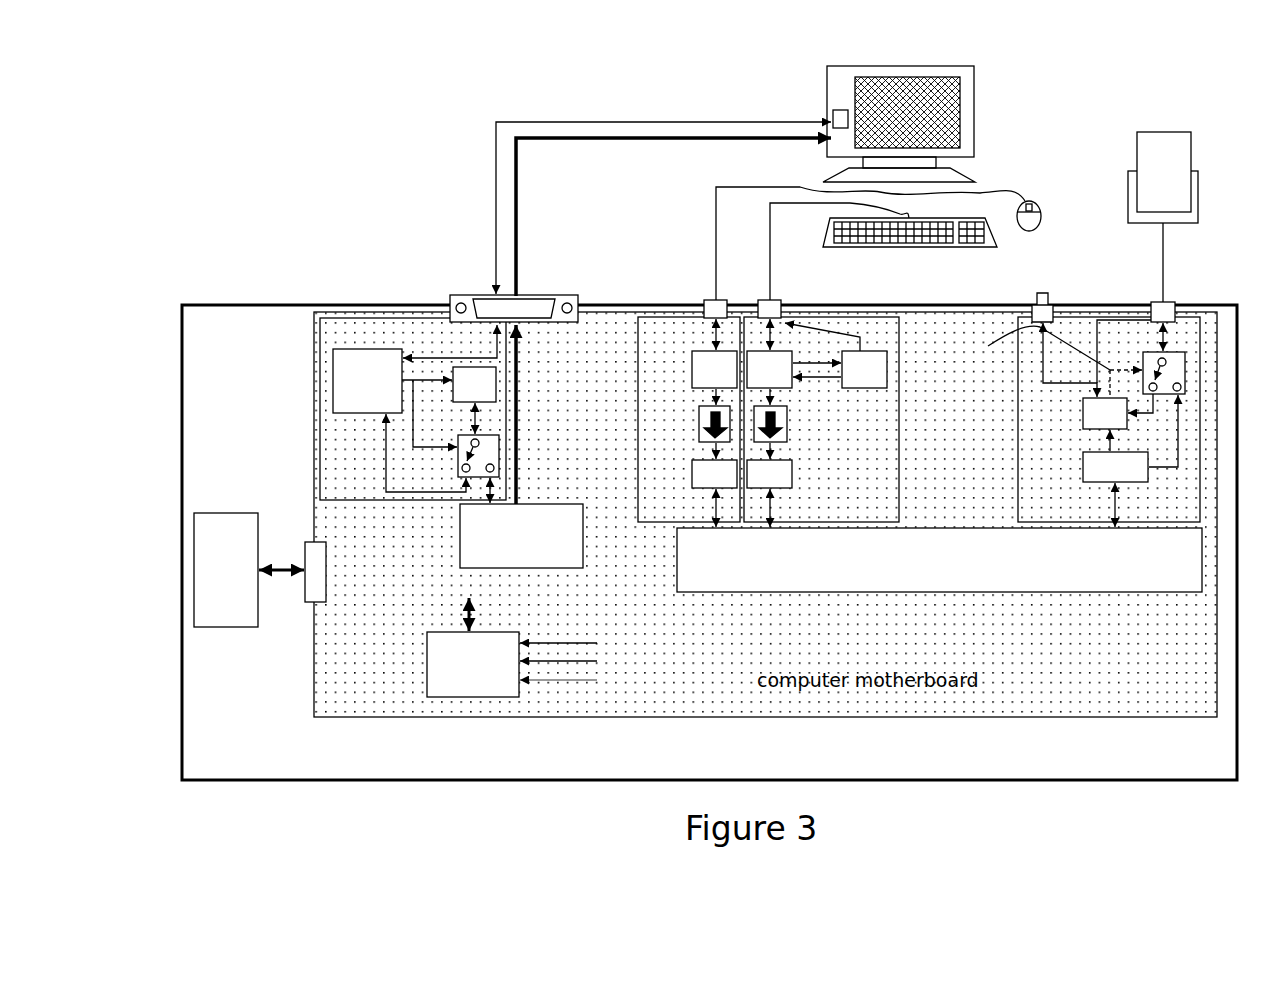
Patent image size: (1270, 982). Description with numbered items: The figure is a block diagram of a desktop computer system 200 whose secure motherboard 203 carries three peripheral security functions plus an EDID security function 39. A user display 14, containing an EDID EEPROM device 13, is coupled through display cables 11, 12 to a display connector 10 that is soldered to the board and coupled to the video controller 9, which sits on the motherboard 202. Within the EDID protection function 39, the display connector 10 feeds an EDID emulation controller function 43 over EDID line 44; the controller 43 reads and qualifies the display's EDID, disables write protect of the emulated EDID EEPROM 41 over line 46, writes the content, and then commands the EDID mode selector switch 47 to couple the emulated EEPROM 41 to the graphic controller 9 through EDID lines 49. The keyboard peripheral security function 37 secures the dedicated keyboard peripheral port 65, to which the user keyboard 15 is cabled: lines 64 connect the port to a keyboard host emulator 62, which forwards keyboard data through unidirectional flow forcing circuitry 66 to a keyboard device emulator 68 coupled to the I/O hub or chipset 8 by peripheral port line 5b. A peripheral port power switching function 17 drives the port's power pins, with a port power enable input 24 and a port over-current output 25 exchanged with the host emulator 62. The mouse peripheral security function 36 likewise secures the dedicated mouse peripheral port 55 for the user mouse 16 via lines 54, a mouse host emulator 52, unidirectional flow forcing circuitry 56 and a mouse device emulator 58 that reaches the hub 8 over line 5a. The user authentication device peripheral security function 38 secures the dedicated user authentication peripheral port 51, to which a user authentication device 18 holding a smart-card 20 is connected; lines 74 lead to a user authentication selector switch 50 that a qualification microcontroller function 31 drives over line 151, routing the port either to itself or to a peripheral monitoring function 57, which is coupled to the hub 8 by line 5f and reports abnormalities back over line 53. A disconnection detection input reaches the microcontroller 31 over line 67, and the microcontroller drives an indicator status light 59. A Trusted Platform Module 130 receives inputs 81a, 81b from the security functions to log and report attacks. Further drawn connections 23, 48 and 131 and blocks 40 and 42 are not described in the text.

The desktop computer system 200 is at (312, 123).
The motherboard 202 is at (278, 304).
The motherboard 203 is at (320, 395).
The display connector 10 is at (452, 296).
The display cable 11 is at (600, 140).
The display cable 12 is at (527, 121).
The EEPROM device 13 is at (832, 115).
The user display 14 is at (975, 85).
The user keyboard 15 is at (830, 228).
The user mouse 16 is at (1041, 222).
The user authentication device 18 is at (1128, 178).
The smart-card 20 is at (1137, 155).
The video signal bus 23 is at (521, 407).
The port power enable input 24 is at (827, 365).
The port over-current output 25 is at (808, 379).
The qualification microcontroller function 31 is at (1083, 413).
The mouse peripheral security function 36 is at (638, 360).
The keyboard peripheral security function 37 is at (899, 450).
The user authentication device peripheral security function 38 is at (1018, 398).
The EDID security function 39 is at (390, 501).
The external device 40 is at (230, 513).
The emulated EDID EEPROM 41 is at (497, 380).
The external connector 42 is at (282, 577).
The EDID emulation controller function 43 is at (384, 348).
The EDID line 44 is at (470, 355).
The write protect line 46 is at (414, 413).
The EDID mode selector switch 47 is at (458, 469).
The signal line 48 is at (385, 452).
The EDID lines 49 is at (493, 490).
The user authentication selector switch 50 is at (1143, 360).
The dedicated user authentication peripheral port 51 is at (1175, 302).
The mouse host emulator 52 is at (692, 372).
The line 53 is at (1108, 441).
The lines 54 is at (712, 335).
The dedicated mouse peripheral port 55 is at (704, 303).
The unidirectional flow forcing circuitry 56 is at (699, 420).
The peripheral monitoring function 57 is at (1083, 468).
The mouse device emulator 58 is at (692, 469).
The indicator status light 59 is at (1035, 296).
The keyboard host emulator 62 is at (762, 351).
The lines 64 is at (775, 338).
The dedicated keyboard peripheral port 65 is at (781, 300).
The unidirectional flow forcing circuitry 66 is at (787, 431).
The line 67 is at (1097, 374).
The keyboard device emulator 68 is at (792, 470).
The lines 74 is at (1160, 337).
The peripheral port line 5a is at (712, 508).
The peripheral port line 5b is at (775, 506).
The peripheral port line 5f is at (1117, 505).
The I/O hub or chipset 8 is at (677, 546).
The video controller 9 is at (583, 515).
The peripheral port power switching function 17 is at (865, 389).
The TPM input 81a is at (599, 643).
The TPM input 81b is at (600, 661).
The Trusted Platform Module 130 is at (427, 660).
The bidirectional bus 131 is at (465, 608).
The line 151 is at (1028, 348).